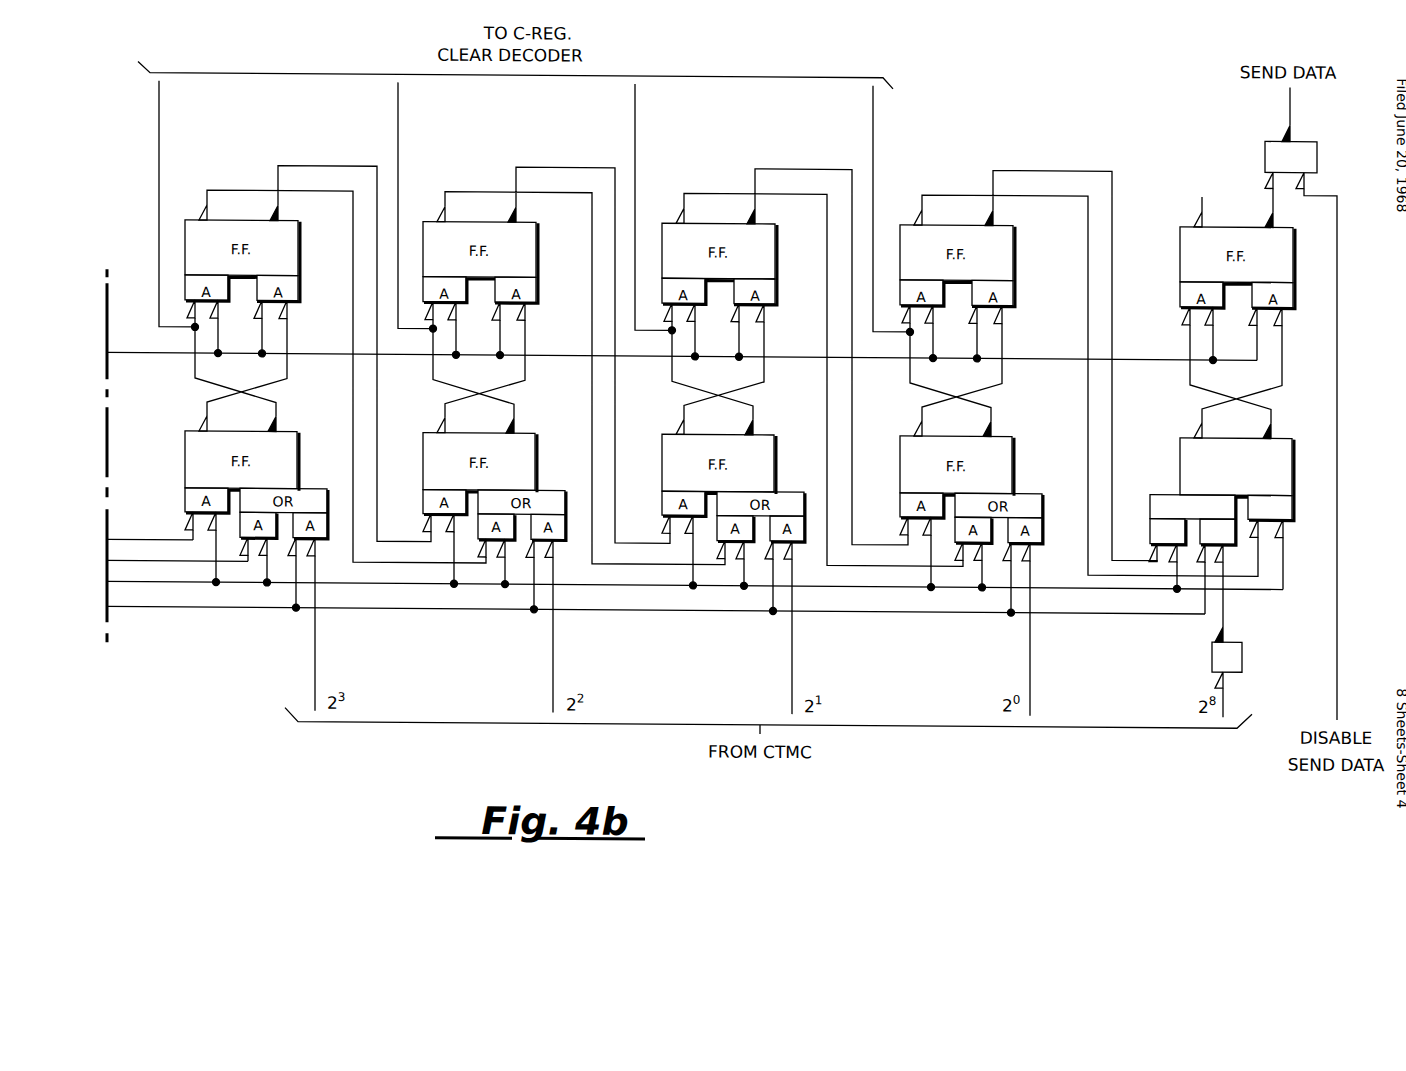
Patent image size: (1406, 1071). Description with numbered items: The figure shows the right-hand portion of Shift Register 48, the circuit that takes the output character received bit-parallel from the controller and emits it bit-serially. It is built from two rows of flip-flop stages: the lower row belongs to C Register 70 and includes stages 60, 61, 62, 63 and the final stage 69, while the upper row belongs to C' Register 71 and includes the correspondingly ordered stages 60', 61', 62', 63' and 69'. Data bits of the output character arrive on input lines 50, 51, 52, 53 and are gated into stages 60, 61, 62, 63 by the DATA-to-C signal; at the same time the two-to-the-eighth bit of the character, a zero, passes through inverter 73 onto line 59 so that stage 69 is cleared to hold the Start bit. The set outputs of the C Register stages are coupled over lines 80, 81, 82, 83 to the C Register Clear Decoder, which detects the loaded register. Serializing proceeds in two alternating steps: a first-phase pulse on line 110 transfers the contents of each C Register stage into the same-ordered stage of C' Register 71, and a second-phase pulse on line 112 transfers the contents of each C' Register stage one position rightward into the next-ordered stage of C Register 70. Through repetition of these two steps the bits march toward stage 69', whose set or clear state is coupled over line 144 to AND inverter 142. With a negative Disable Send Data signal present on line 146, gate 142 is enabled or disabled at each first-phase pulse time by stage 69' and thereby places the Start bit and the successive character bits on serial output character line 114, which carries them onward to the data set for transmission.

The line 83 is at (159, 113).
The line 82 is at (398, 113).
The line 81 is at (635, 113).
The line 80 is at (873, 113).
The stage of C' Register 63' is at (335, 364).
The stage of C' Register 62' is at (574, 366).
The stage of C' Register 61' is at (812, 367).
The stage of C' Register 60' is at (1079, 373).
The stage of C' Register 69' is at (1252, 310).
The stage of C Register 63 is at (256, 510).
The stage of C Register 62 is at (494, 512).
The stage of C Register 61 is at (733, 513).
The stage of C Register 60 is at (971, 515).
The stage of C Register 69 is at (1232, 522).
The input line 53 is at (315, 672).
The input line 52 is at (553, 672).
The input line 51 is at (792, 672).
The input line 50 is at (1030, 672).
The line 59 is at (1228, 688).
The inverter 73 is at (1242, 650).
The line 110 is at (168, 357).
The line 112 is at (178, 592).
The serial output character line 114 is at (1290, 97).
The AND inverter 142 is at (1317, 137).
The line 144 is at (1272, 190).
The line 146 is at (1337, 688).
The C' Register 71 is at (1357, 278).
The C Register 70 is at (1355, 485).
The Shift Register 48 is at (1212, 809).